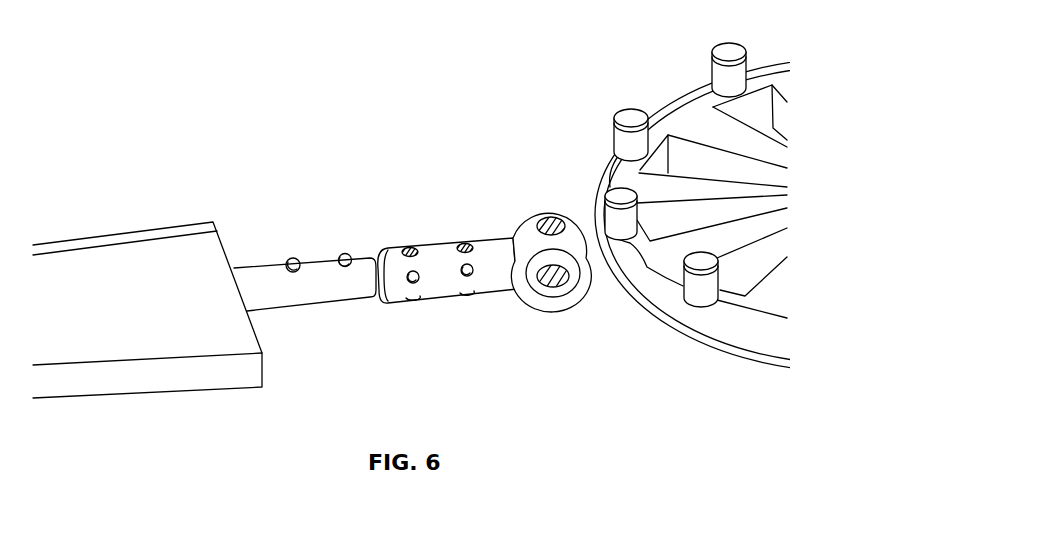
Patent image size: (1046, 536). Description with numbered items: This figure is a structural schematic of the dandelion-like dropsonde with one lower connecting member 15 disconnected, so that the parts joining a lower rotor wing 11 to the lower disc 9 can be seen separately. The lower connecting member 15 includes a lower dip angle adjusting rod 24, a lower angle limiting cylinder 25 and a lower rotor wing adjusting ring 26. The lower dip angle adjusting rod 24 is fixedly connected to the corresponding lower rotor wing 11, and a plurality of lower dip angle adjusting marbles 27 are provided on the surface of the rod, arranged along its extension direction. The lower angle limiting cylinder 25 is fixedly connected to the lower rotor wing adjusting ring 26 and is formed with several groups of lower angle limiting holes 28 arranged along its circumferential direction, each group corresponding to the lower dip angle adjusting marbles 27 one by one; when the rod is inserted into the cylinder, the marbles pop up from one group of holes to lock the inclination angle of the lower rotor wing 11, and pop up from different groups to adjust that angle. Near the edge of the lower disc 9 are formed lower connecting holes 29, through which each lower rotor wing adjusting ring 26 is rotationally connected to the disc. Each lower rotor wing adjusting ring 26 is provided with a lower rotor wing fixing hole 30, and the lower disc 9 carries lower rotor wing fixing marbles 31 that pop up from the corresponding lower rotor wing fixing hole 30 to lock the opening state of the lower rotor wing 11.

The lower disc 9 is at (794, 221).
The lower rotor wing 11 is at (185, 250).
The lower connecting member 15 is at (414, 290).
The lower dip angle adjusting rod 24 is at (305, 276).
The lower angle limiting cylinder 25 is at (447, 271).
The lower rotor wing adjusting ring 26 is at (544, 261).
The lower dip angle adjusting marble 27 is at (293, 258).
The lower angle limiting hole 28 is at (410, 249).
The lower connecting hole 29 is at (687, 153).
The lower rotor wing fixing hole 30 is at (552, 223).
The lower rotor wing fixing marble 31 is at (613, 185).